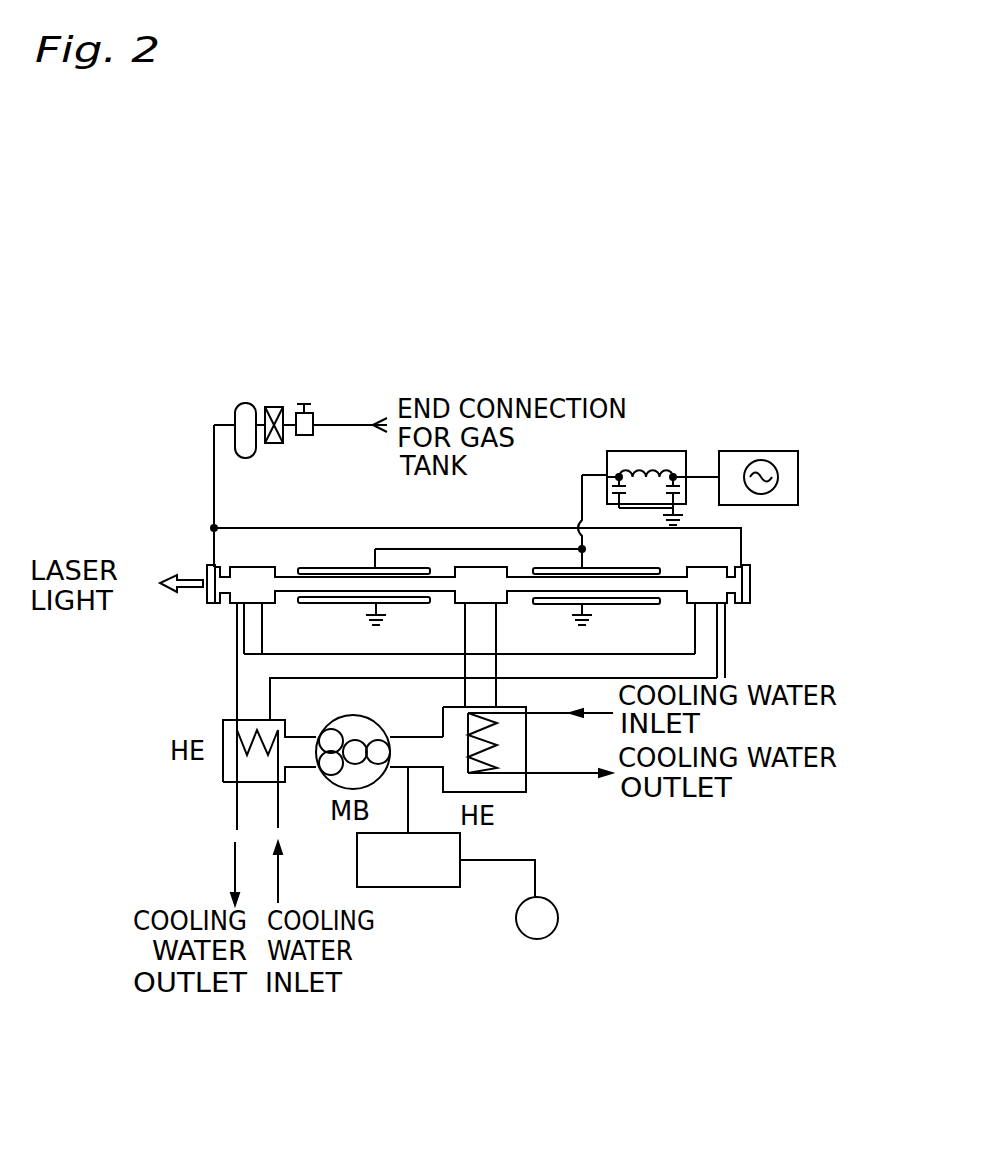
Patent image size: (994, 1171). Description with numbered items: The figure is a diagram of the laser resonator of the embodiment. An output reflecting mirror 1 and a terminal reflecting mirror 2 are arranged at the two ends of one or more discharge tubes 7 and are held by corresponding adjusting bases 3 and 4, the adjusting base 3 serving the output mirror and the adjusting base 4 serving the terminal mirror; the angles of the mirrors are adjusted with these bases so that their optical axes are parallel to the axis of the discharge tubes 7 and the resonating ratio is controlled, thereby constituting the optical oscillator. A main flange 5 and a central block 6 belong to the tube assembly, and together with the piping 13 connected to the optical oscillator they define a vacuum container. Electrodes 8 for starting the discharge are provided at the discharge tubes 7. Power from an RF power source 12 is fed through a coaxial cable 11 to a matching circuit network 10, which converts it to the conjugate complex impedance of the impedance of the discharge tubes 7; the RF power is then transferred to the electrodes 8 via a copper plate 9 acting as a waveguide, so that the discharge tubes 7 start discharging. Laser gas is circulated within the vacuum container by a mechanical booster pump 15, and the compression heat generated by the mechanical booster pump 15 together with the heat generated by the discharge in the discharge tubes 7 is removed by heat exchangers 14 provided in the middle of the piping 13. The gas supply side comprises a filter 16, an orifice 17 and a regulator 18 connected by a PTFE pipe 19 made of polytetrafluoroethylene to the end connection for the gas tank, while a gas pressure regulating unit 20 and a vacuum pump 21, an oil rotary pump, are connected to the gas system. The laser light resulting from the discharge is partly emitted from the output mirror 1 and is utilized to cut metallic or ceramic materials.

The output reflecting mirror 1 is at (212, 565).
The terminal reflecting mirror 2 is at (752, 582).
The adjusting base 3 is at (218, 605).
The adjusting base 4 is at (748, 604).
The main flange 5 is at (234, 607).
The central block 6 is at (477, 566).
The discharge tube 7 is at (445, 598).
The electrode 8 is at (311, 597).
The copper plate 9 is at (594, 475).
The matching circuit network 10 is at (652, 451).
The coaxial cable 11 is at (700, 472).
The RF power source 12 is at (762, 451).
The piping 13 is at (497, 692).
The heat exchanger 14 is at (223, 773).
The mechanical booster pump 15 is at (368, 717).
The filter 16 is at (236, 404).
The orifice 17 is at (268, 407).
The regulator 18 is at (303, 403).
The PTFE pipe 19 is at (214, 472).
The gas pressure regulating unit 20 is at (422, 888).
The vacuum pump 21 is at (538, 940).